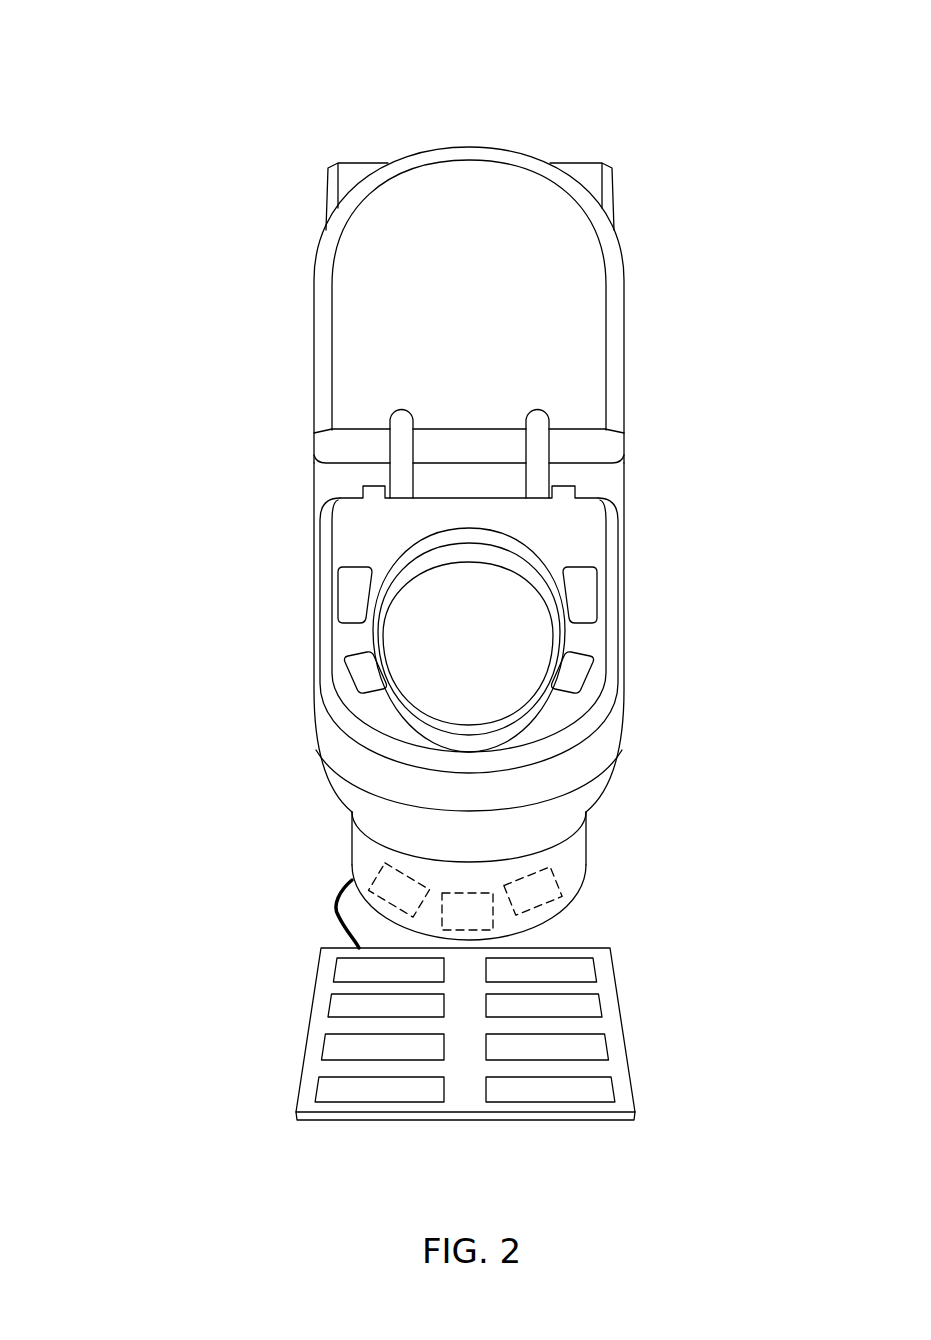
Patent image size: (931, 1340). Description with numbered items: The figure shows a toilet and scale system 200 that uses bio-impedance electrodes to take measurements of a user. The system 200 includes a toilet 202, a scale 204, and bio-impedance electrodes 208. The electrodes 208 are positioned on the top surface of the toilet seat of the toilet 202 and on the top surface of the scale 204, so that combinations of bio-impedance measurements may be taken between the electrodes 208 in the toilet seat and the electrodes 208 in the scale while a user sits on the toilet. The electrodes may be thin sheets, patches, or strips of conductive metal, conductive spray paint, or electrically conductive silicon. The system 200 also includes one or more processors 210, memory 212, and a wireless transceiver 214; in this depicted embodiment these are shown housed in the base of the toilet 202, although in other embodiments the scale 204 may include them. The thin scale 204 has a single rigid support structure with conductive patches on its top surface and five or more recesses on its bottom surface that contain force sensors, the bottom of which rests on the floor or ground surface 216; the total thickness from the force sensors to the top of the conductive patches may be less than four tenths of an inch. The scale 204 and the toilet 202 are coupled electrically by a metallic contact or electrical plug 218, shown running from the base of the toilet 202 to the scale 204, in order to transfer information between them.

The system 200 is at (182, 55).
The toilet 202 is at (687, 427).
The scale 204 is at (630, 1057).
The bio-impedance electrodes 208 is at (338, 597).
The processors 210 is at (375, 878).
The memory 212 is at (493, 921).
The wireless transceiver 214 is at (560, 878).
The floor or ground surface 216 is at (246, 1087).
The electrical plug 218 is at (333, 910).